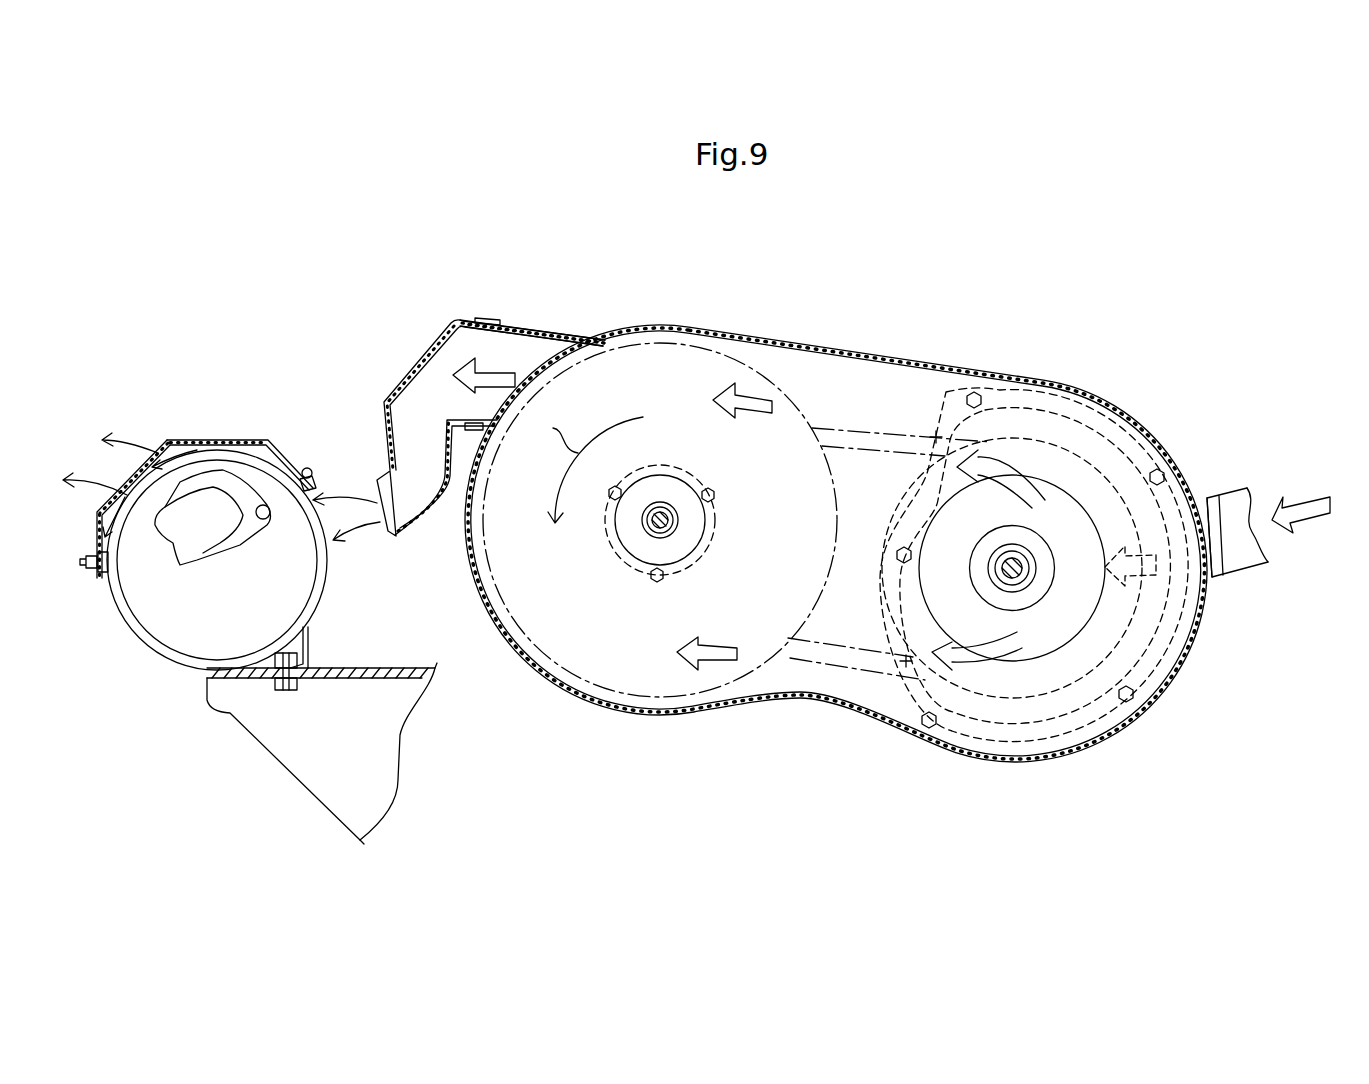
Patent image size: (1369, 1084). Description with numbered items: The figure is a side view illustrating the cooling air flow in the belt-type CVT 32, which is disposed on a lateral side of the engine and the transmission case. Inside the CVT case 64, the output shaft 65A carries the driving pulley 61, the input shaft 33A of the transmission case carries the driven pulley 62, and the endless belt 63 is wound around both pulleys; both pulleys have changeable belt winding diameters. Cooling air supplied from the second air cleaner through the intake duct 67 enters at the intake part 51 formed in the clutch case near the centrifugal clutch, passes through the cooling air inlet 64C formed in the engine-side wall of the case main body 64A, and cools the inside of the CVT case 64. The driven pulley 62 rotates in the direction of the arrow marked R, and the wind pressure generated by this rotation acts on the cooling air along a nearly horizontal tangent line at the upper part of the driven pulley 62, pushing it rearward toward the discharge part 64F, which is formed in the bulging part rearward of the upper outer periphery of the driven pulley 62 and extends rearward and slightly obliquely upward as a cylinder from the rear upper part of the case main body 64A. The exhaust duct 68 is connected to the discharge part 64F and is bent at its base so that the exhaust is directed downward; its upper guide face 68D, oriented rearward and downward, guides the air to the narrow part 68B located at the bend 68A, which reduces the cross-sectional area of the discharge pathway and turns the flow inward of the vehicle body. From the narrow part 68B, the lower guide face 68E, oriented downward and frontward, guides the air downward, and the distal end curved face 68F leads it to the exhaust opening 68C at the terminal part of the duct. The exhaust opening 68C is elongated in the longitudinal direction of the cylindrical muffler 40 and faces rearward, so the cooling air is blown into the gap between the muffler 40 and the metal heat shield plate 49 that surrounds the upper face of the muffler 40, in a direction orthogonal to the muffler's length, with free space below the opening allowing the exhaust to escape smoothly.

The belt-type CVT 32 is at (895, 504).
The input shaft 33A is at (650, 528).
The muffler 40 is at (157, 637).
The heat shield plate 49 is at (193, 440).
The intake part 51 is at (1213, 580).
The driving pulley 61 is at (1025, 701).
The driven pulley 62 is at (568, 670).
The endless belt 63 is at (810, 660).
The CVT case 64 is at (836, 516).
The case main body 64A is at (877, 357).
The cooling air inlet 64C is at (1071, 612).
The discharge part 64F is at (553, 332).
The output shaft 65A is at (1000, 565).
The intake duct 67 is at (1233, 498).
The exhaust duct 68 is at (436, 433).
The bend 68A is at (388, 407).
The narrow part 68B is at (431, 398).
The exhaust opening 68C is at (378, 532).
The upper guide face 68D is at (467, 420).
The lower guide face 68E is at (392, 444).
The distal end curved face 68F is at (381, 529).